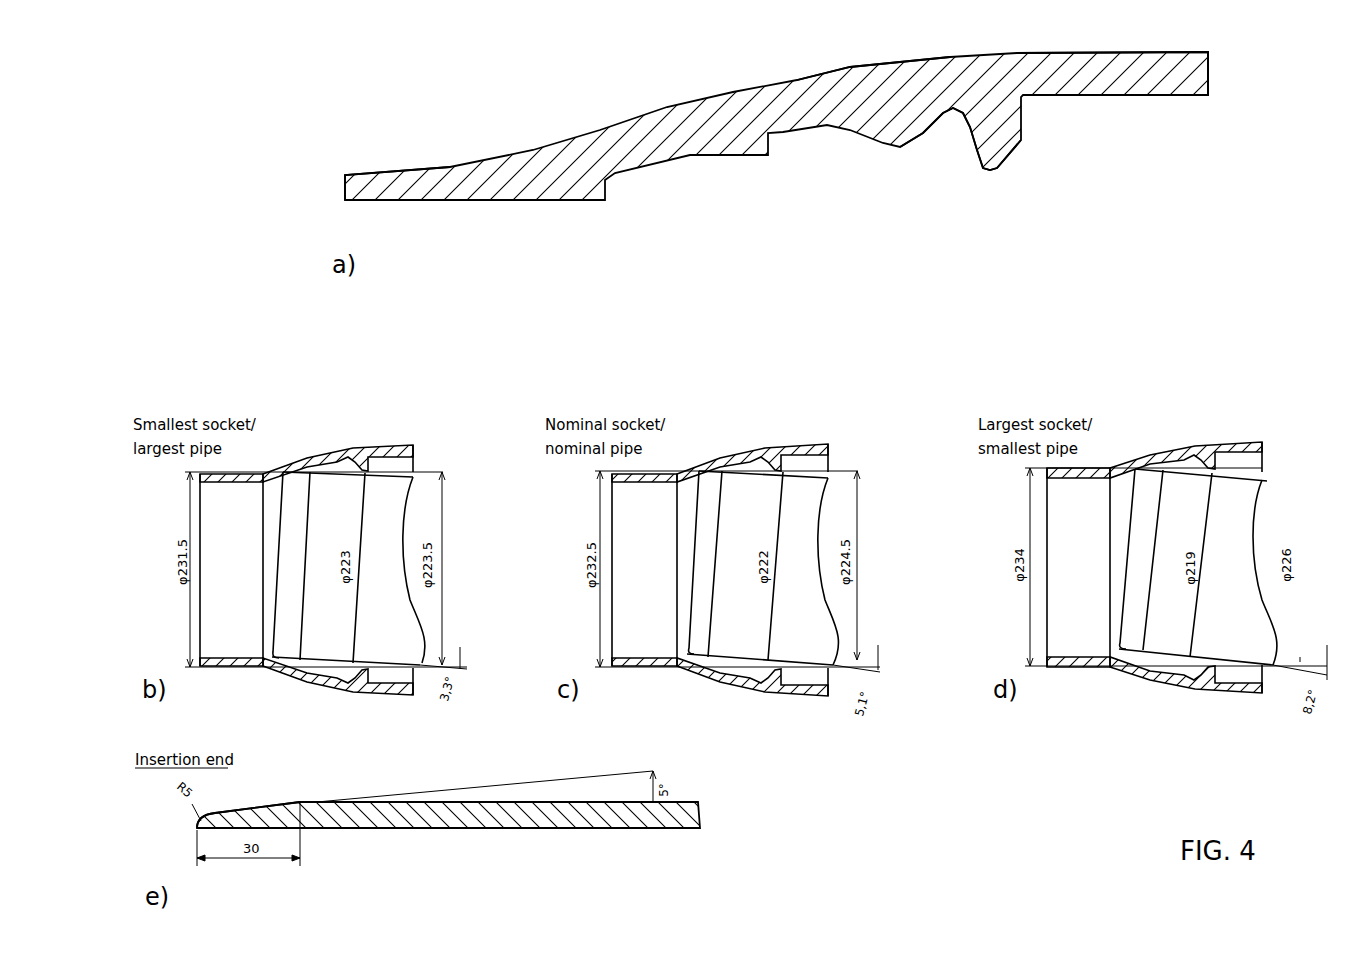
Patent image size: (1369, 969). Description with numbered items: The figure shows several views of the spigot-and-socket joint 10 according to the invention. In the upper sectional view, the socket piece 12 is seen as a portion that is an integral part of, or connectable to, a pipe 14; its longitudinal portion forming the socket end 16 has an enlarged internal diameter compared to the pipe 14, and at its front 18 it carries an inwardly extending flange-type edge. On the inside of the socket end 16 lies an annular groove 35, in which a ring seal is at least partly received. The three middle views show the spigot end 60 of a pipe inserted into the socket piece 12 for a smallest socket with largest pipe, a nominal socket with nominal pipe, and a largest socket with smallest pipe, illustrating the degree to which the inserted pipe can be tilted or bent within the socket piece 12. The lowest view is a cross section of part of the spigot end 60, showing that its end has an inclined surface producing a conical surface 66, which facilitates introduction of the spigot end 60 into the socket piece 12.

The spigot-and-socket joint 10 is at (548, 108).
The socket piece 12 is at (818, 68).
The pipe 14 is at (345, 180).
The socket end 16 is at (1187, 47).
The front 18 is at (1210, 78).
The annular groove 35 is at (955, 127).
The spigot end 60 is at (390, 527).
The conical surface 66 is at (262, 805).